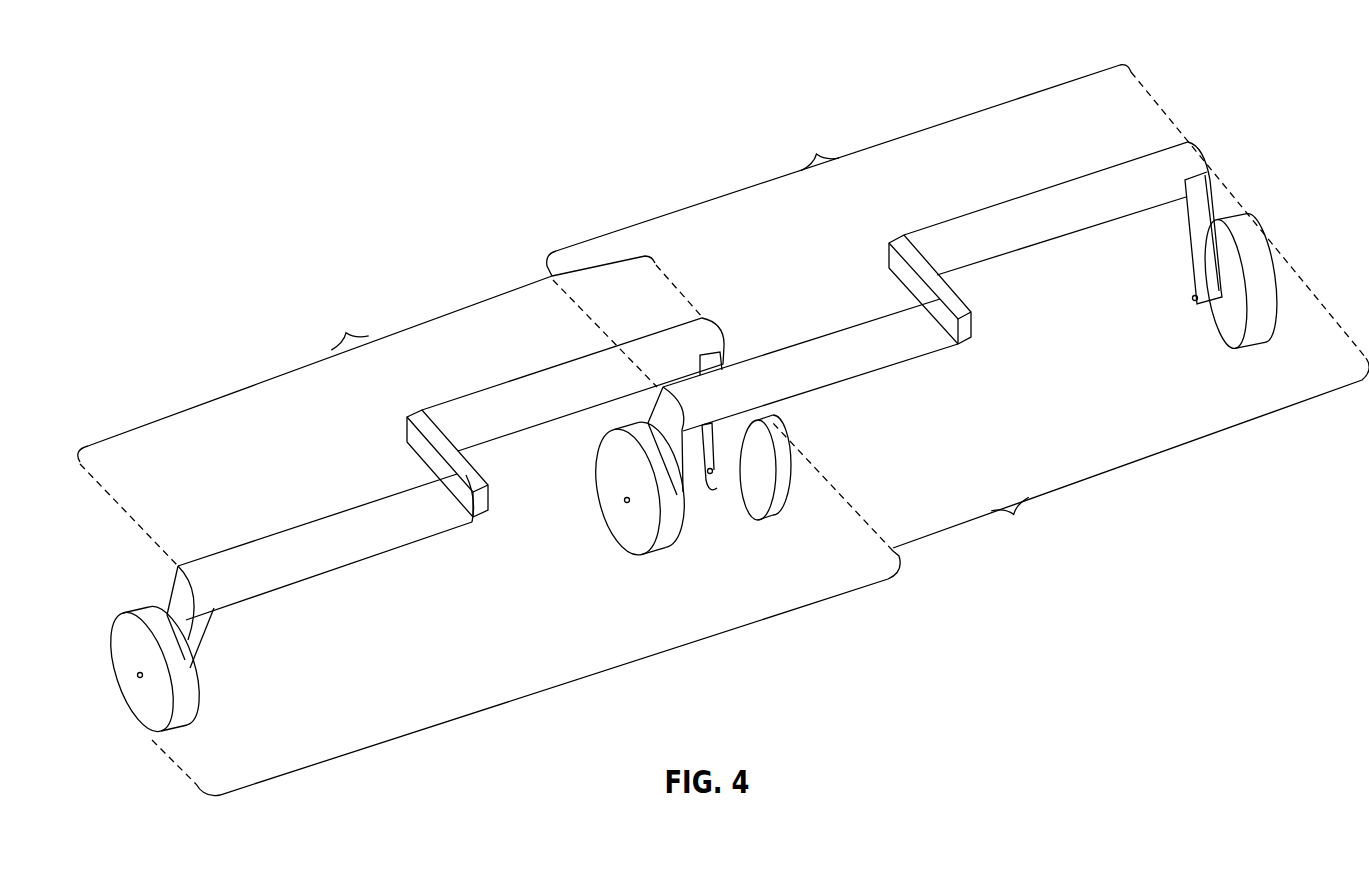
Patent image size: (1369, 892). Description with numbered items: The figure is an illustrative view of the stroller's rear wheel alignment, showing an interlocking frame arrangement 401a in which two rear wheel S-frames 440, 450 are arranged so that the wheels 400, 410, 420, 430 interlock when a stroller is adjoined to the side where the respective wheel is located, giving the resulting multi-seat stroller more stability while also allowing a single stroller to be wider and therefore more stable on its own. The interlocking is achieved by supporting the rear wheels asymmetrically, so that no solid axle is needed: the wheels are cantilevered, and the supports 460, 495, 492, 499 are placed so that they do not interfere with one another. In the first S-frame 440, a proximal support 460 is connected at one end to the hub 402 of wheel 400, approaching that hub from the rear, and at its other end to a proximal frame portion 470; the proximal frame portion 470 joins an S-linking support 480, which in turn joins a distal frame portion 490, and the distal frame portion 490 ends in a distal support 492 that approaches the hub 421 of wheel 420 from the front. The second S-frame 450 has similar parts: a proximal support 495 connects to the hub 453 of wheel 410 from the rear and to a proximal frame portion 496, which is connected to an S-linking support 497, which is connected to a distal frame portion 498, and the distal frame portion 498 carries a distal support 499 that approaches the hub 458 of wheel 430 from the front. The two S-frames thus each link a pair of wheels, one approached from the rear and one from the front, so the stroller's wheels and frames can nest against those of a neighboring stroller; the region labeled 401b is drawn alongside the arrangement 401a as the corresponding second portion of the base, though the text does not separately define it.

The wheel 400 is at (117, 617).
The hub 402 is at (138, 677).
The wheel 410 is at (597, 477).
The wheel 420 is at (773, 417).
The hub 421 is at (712, 478).
The wheel 430 is at (1246, 226).
The first S-frame 440 is at (315, 369).
The second S-frame 450 is at (839, 170).
The hub 453 is at (625, 501).
The hub 458 is at (1192, 303).
The proximal support 460 is at (210, 637).
The proximal frame portion 470 is at (305, 520).
The S-linking support 480 is at (423, 445).
The distal frame portion 490 is at (503, 380).
The distal support 492 is at (727, 363).
The proximal support 495 is at (683, 483).
The proximal frame portion 496 is at (837, 330).
The S-linking support 497 is at (966, 299).
The distal frame portion 498 is at (1086, 236).
The distal support 499 is at (1213, 186).
The interlocking frame arrangement 401a is at (490, 609).
The second panel section 401b is at (960, 310).